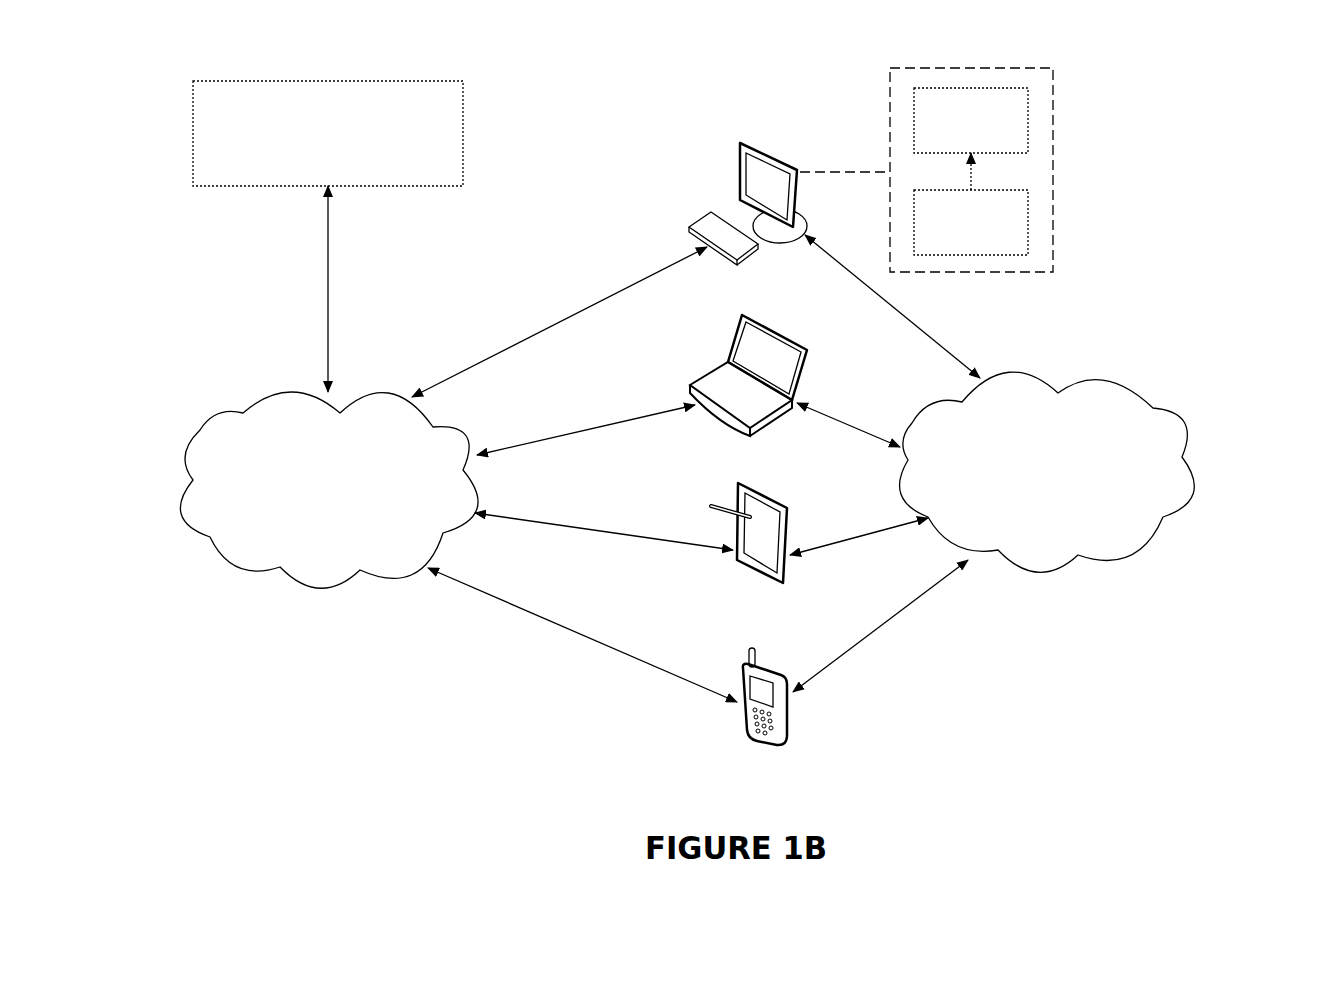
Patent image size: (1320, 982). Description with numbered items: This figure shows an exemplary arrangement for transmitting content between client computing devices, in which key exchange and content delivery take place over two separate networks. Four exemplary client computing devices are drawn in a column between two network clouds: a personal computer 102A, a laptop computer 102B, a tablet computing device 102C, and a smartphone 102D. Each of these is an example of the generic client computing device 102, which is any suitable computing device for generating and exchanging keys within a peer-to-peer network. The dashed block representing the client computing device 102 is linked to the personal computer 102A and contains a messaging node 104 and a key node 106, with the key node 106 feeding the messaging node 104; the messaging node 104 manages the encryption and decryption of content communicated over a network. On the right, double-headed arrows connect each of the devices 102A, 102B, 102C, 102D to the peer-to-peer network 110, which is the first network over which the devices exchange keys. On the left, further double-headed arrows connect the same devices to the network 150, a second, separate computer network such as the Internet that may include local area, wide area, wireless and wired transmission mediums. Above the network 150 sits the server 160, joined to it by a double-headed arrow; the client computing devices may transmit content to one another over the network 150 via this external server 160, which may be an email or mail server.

The client computing device 102 is at (970, 68).
The personal computer 102A is at (740, 150).
The laptop computer 102B is at (710, 365).
The tablet computing device 102C is at (752, 575).
The smartphone 102D is at (752, 741).
The messaging node 104 is at (1028, 118).
The key node 106 is at (1028, 222).
The peer-to-peer network 110 is at (1195, 484).
The network 150 is at (200, 430).
The server 160 is at (328, 133).